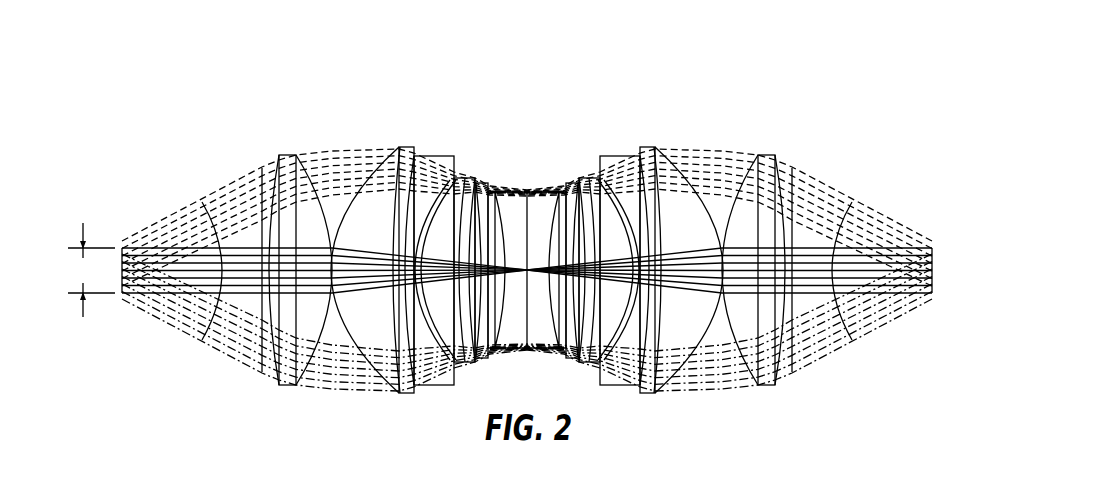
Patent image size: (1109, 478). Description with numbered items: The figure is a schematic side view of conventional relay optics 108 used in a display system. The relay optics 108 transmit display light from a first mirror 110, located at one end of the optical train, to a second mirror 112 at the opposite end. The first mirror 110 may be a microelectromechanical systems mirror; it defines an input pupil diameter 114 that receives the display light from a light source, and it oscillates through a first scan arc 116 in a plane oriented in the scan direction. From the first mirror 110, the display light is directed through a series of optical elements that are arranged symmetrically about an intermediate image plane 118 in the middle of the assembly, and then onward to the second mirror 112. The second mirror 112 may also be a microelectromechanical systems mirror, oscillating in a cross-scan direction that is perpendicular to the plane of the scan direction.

The relay optics 108 is at (688, 135).
The first mirror 110 is at (127, 236).
The second mirror 112 is at (928, 236).
The input pupil diameter 114 is at (91, 270).
The first scan arc 116 is at (215, 296).
The intermediate image plane 118 is at (530, 211).